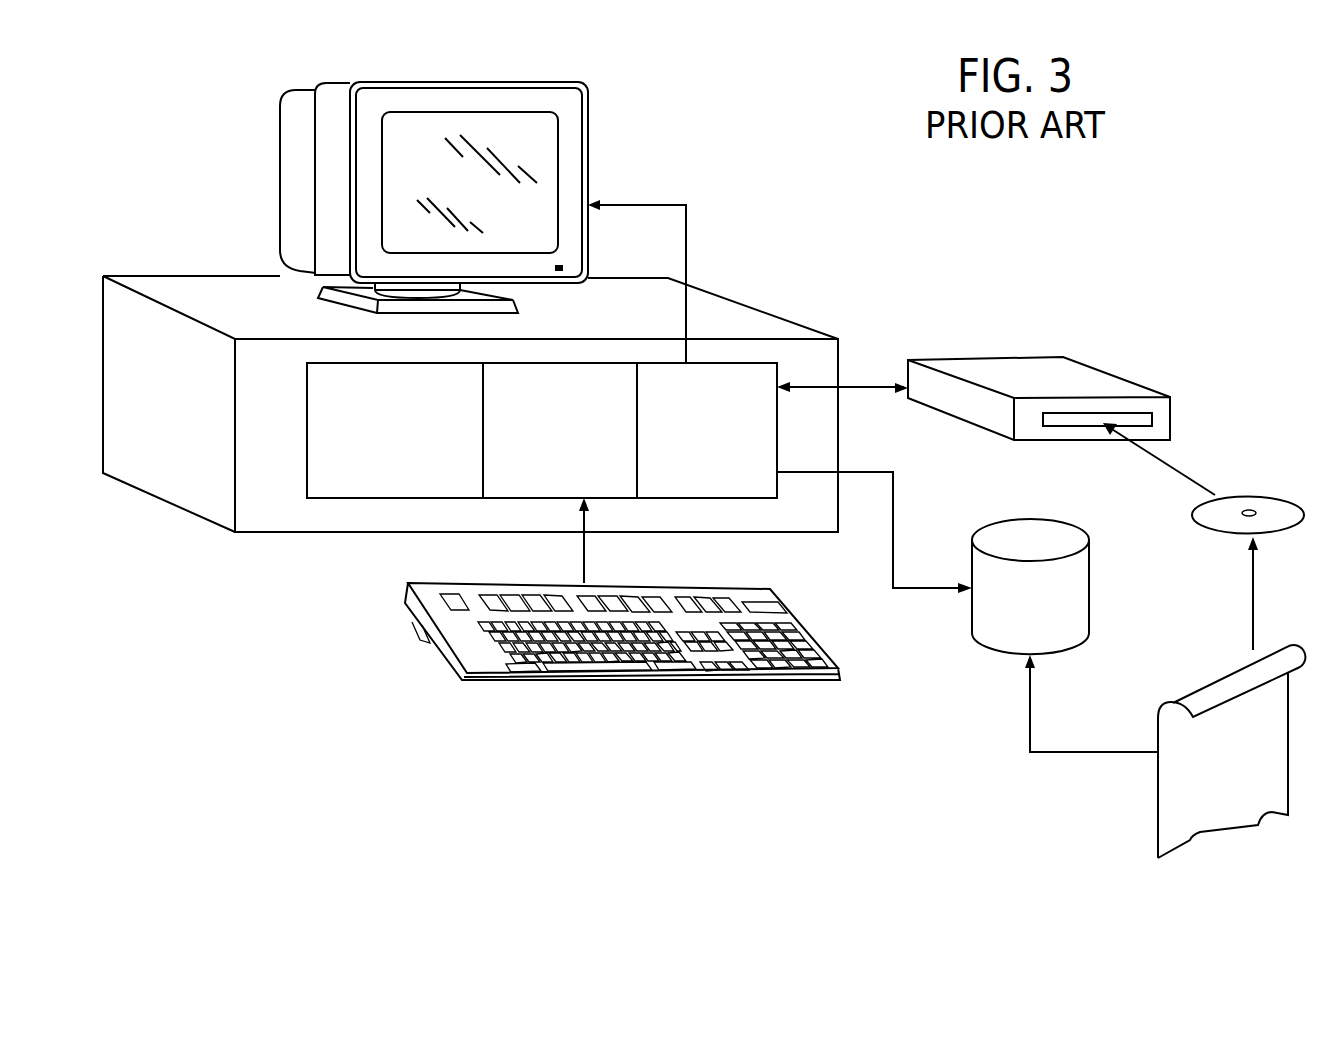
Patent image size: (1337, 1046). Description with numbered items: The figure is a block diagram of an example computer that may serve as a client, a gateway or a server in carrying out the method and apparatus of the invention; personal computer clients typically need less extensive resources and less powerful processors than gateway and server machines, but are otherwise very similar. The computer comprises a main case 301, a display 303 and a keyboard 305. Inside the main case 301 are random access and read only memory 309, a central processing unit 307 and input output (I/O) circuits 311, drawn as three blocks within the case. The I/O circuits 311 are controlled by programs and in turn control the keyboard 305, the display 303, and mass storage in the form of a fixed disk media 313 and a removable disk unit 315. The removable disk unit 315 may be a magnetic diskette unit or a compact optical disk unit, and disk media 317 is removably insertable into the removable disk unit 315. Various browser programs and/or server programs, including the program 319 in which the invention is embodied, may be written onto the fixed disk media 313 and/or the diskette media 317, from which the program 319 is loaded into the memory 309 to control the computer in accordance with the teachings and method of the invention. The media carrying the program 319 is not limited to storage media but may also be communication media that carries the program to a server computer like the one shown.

The main case 301 is at (743, 303).
The display 303 is at (282, 158).
The keyboard 305 is at (423, 639).
The central processing unit 307 is at (537, 489).
The random access and read only memory 309 is at (347, 492).
The input output (I/O) circuits 311 is at (745, 489).
The fixed disk media 313 is at (993, 652).
The removable disk unit 315 is at (1103, 372).
The disk media 317 is at (1275, 496).
The program 319 is at (1218, 682).